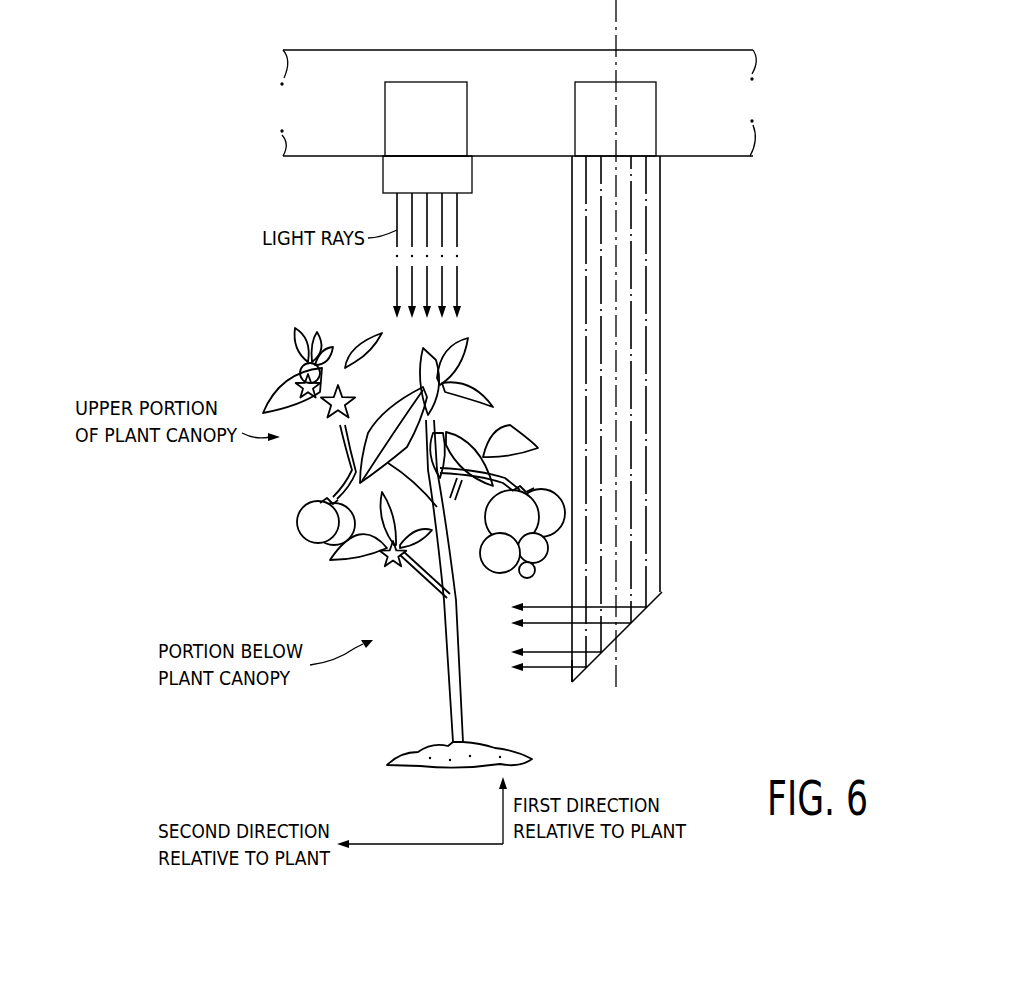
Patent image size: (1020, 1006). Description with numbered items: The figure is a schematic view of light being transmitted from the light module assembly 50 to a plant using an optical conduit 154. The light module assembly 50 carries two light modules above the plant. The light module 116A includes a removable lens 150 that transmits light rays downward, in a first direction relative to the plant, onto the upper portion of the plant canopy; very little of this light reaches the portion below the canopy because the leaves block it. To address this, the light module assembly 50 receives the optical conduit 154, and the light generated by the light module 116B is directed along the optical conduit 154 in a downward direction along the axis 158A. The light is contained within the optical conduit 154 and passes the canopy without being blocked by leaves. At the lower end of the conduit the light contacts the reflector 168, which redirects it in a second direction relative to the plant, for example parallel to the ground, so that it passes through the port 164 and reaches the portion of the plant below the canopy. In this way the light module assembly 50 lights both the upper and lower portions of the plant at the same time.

The light module assembly 50 is at (452, 50).
The light module 116A is at (385, 123).
The light module 116B is at (656, 110).
The removable lens 150 is at (383, 173).
The axis 158A is at (616, 17).
The optical conduit 154 is at (662, 452).
The reflector 168 is at (620, 630).
The port 164 is at (572, 672).